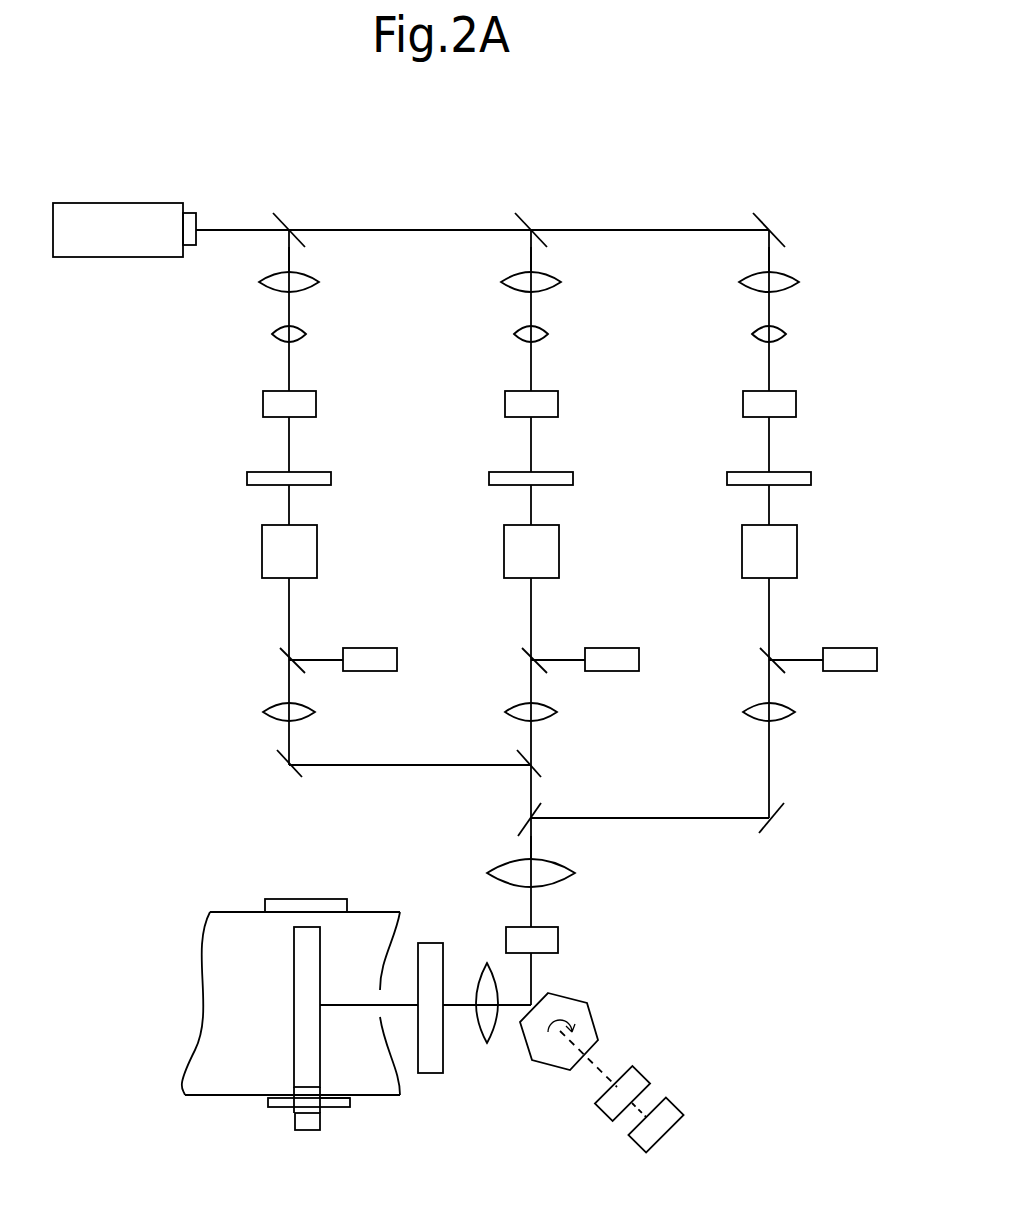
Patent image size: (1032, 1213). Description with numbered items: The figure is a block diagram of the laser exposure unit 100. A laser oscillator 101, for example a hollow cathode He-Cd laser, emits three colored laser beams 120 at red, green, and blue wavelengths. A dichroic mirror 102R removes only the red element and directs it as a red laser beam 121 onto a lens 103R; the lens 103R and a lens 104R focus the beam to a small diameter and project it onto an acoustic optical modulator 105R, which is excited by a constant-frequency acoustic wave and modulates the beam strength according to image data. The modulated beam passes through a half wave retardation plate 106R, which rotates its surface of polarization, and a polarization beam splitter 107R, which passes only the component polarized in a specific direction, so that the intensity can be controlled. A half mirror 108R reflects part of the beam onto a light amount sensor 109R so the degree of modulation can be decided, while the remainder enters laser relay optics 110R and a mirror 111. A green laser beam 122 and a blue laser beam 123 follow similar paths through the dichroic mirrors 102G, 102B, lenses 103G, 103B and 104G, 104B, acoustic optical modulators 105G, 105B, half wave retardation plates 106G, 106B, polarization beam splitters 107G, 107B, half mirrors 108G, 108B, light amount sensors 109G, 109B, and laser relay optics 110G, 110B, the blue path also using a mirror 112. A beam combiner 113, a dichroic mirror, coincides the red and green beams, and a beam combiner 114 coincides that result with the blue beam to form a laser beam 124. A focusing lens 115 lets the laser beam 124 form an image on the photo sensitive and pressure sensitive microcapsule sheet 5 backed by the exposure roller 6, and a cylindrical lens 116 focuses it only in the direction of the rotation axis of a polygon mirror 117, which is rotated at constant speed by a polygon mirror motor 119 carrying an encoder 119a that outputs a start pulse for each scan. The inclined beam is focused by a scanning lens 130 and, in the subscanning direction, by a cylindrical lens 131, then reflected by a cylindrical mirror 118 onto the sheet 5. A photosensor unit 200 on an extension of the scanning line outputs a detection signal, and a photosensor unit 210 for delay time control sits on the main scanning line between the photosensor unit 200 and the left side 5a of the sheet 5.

The laser exposure unit 100 is at (435, 155).
The laser oscillator 101 is at (107, 203).
The laser beams 120 is at (225, 226).
The dichroic mirror 102R is at (280, 215).
The dichroic mirror 102G is at (522, 215).
The dichroic mirror 102B is at (762, 215).
The red laser beam 121 is at (288, 250).
The green laser beam 122 is at (530, 250).
The blue laser beam 123 is at (768, 250).
The lens 103R is at (315, 280).
The lens 103G is at (557, 280).
The lens 103B is at (795, 280).
The lens 104R is at (306, 330).
The lens 104G is at (548, 330).
The lens 104B is at (786, 330).
The acoustic optical modulator 105R is at (310, 390).
The acoustic optical modulator 105G is at (552, 390).
The acoustic optical modulator 105B is at (792, 390).
The half wave retardation plate 106R is at (318, 470).
The half wave retardation plate 106G is at (560, 470).
The half wave retardation plate 106B is at (798, 470).
The polarization beam splitter 107R is at (312, 525).
The polarization beam splitter 107G is at (554, 525).
The polarization beam splitter 107B is at (797, 527).
The half mirror 108R is at (280, 650).
The half mirror 108G is at (522, 650).
The half mirror 108B is at (760, 650).
The light amount sensor 109R is at (365, 648).
The light amount sensor 109G is at (620, 648).
The light amount sensor 109B is at (858, 648).
The laser relay optics 110R is at (310, 710).
The laser relay optics 110G is at (552, 710).
The laser relay optics 110B is at (790, 710).
The mirror 111 is at (292, 775).
The mirror 112 is at (775, 825).
The beam combiner 113 is at (545, 768).
The beam combiner 114 is at (538, 812).
The laser beam 124 is at (520, 836).
The focusing lens 115 is at (565, 865).
The cylindrical lens 116 is at (560, 935).
The polygon mirror 117 is at (590, 1008).
The polygon mirror motor 119 is at (633, 1065).
The encoder 119a is at (695, 1092).
The scanning lens 130 is at (490, 1037).
The cylindrical lens 131 is at (440, 1063).
The photo sensitive and pressure sensitive microcapsule sheet 5 is at (222, 1088).
The left side of the microcapsule sheet 5a is at (240, 1097).
The exposure roller 6 is at (270, 899).
The cylindrical mirror 118 is at (313, 927).
The photosensor unit 200 is at (322, 1122).
The photosensor unit 210 is at (317, 1102).